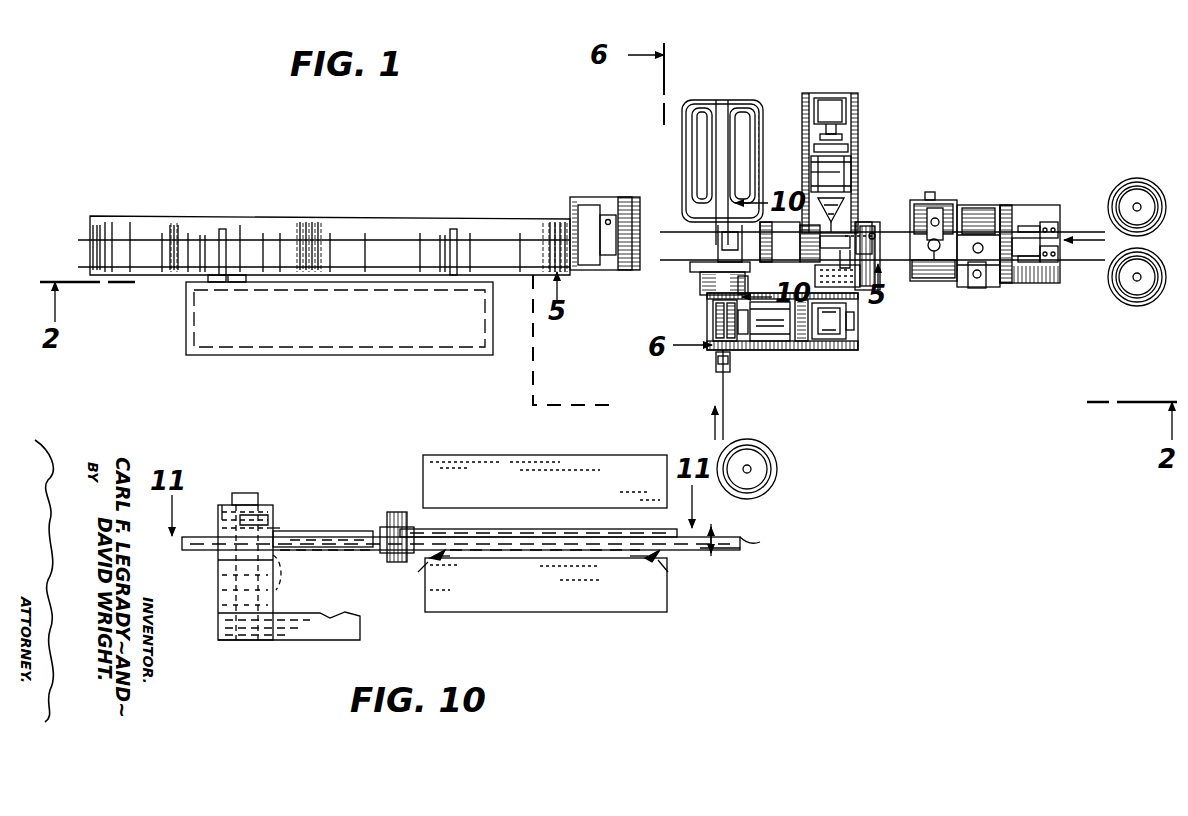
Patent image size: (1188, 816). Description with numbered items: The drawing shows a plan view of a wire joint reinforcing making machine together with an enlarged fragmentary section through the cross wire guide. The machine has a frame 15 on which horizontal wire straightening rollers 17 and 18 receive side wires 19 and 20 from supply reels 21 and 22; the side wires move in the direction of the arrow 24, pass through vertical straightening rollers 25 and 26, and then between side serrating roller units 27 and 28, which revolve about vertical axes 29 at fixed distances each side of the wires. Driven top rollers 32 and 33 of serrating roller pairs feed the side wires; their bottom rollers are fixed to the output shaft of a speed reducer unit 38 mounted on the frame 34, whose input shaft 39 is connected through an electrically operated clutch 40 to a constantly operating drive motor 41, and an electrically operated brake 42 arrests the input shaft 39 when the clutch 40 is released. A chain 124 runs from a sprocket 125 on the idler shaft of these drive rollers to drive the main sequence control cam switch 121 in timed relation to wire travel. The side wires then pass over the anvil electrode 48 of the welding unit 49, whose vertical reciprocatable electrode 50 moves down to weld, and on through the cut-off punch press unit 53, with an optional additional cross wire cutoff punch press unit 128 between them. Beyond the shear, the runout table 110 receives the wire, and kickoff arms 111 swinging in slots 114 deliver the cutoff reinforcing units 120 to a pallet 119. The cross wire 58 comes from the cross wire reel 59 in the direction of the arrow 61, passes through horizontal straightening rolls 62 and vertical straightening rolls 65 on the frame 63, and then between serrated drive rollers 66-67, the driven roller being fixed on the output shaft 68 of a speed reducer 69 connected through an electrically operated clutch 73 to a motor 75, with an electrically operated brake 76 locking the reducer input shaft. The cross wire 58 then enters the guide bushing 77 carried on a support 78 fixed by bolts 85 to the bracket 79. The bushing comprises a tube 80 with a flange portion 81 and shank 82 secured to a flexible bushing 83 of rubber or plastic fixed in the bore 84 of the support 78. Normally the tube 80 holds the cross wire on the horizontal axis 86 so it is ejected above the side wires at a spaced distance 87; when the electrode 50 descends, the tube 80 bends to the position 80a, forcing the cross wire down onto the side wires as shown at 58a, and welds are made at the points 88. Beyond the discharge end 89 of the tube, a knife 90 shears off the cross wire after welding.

In FIG. 1, the runout table 110 is at (370, 222).
In FIG. 1, the kickoff arms 111 is at (228, 240).
In FIG. 1, the slots 114 is at (214, 246).
In FIG. 1, the pallet 119 is at (432, 335).
In FIG. 1, the cutoff reinforcing units 120 is at (298, 240).
In FIG. 1, the additional cross wire cutoff punch press unit 128 is at (628, 198).
In FIG. 1, the cut-off punch press unit 53 is at (592, 215).
In FIG. 1, the welding unit 49 is at (722, 112).
In FIG. 1, the drive motor 41 is at (832, 104).
In FIG. 1, the electrically operated clutch 40 is at (846, 138).
In FIG. 1, the electrically operated brake 42 is at (850, 150).
In FIG. 1, the speed reducer unit 38 is at (852, 176).
In FIG. 1, the input shaft 39 is at (812, 168).
In FIG. 1, the sprocket 125 is at (822, 206).
In FIG. 1, the chain 124 is at (864, 222).
In FIG. 1, the main sequence control cam switch 121 is at (874, 232).
In FIG. 1, the top roller 32 is at (790, 242).
In FIG. 1, the top roller 33 is at (824, 254).
In FIG. 1, the frame 34 is at (882, 276).
In FIG. 1, the support 78 is at (706, 290).
In FIG. 10, the support 78 is at (222, 605).
In FIG. 1, the output shaft 68 is at (760, 290).
In FIG. 1, the frame 63 is at (852, 342).
In FIG. 1, the serrated drive rollers 66-67 is at (716, 326).
In FIG. 1, the vertical straightening rolls 65 is at (730, 348).
In FIG. 1, the speed reducer 69 is at (770, 348).
In FIG. 1, the electrically operated brake 76 is at (802, 348).
In FIG. 1, the electrically operated clutch 73 is at (826, 346).
In FIG. 1, the motor 75 is at (852, 324).
In FIG. 1, the horizontal straightening rolls 62 is at (730, 370).
In FIG. 1, the cross wire 58 is at (730, 410).
In FIG. 10, the cross wire 58 is at (196, 550).
In FIG. 1, the arrow 61 is at (712, 408).
In FIG. 1, the cross wire reel 59 is at (778, 462).
In FIG. 1, the side serrating roller unit 28 is at (914, 232).
In FIG. 1, the vertical axes 29 is at (936, 216).
In FIG. 1, the side serrating roller unit 27 is at (960, 268).
In FIG. 1, the frame 15 is at (978, 210).
In FIG. 1, the side wire 19 is at (1006, 222).
In FIG. 10, the side wire 19 is at (644, 560).
In FIG. 1, the vertical straightening rollers 25 is at (1036, 226).
In FIG. 1, the horizontal wire straightening rollers 17 is at (1050, 222).
In FIG. 1, the vertical straightening rollers 26 is at (1030, 266).
In FIG. 1, the horizontal wire straightening rollers 18 is at (1052, 266).
In FIG. 1, the side wire 20 is at (1018, 260).
In FIG. 10, the side wire 20 is at (442, 560).
In FIG. 1, the arrow 24 is at (1086, 240).
In FIG. 1, the supply reel 21 is at (1137, 185).
In FIG. 1, the supply reel 22 is at (1137, 306).
In FIG. 10, the bracket 79 is at (298, 640).
In FIG. 10, the bolts 85 is at (246, 493).
In FIG. 10, the flexible bushing 83 is at (222, 500).
In FIG. 10, the shank 82 is at (264, 520).
In FIG. 10, the flange portion 81 is at (276, 534).
In FIG. 10, the bore 84 is at (293, 579).
In FIG. 10, the tube 80 is at (346, 532).
In FIG. 10, the guide bushing 77 is at (336, 546).
In FIG. 10, the bent-down position of the tube 80a is at (325, 578).
In FIG. 10, the discharge end 89 is at (386, 522).
In FIG. 10, the knife 90 is at (394, 512).
In FIG. 10, the axis 86 is at (430, 530).
In FIG. 10, the spaced distance 87 is at (740, 546).
In FIG. 10, the vertical reciprocatable electrode 50 is at (598, 456).
In FIG. 10, the anvil electrode 48 is at (566, 612).
In FIG. 10, the weld points 88 is at (432, 562).
In FIG. 10, the cross wire in lowered position 58a is at (534, 556).